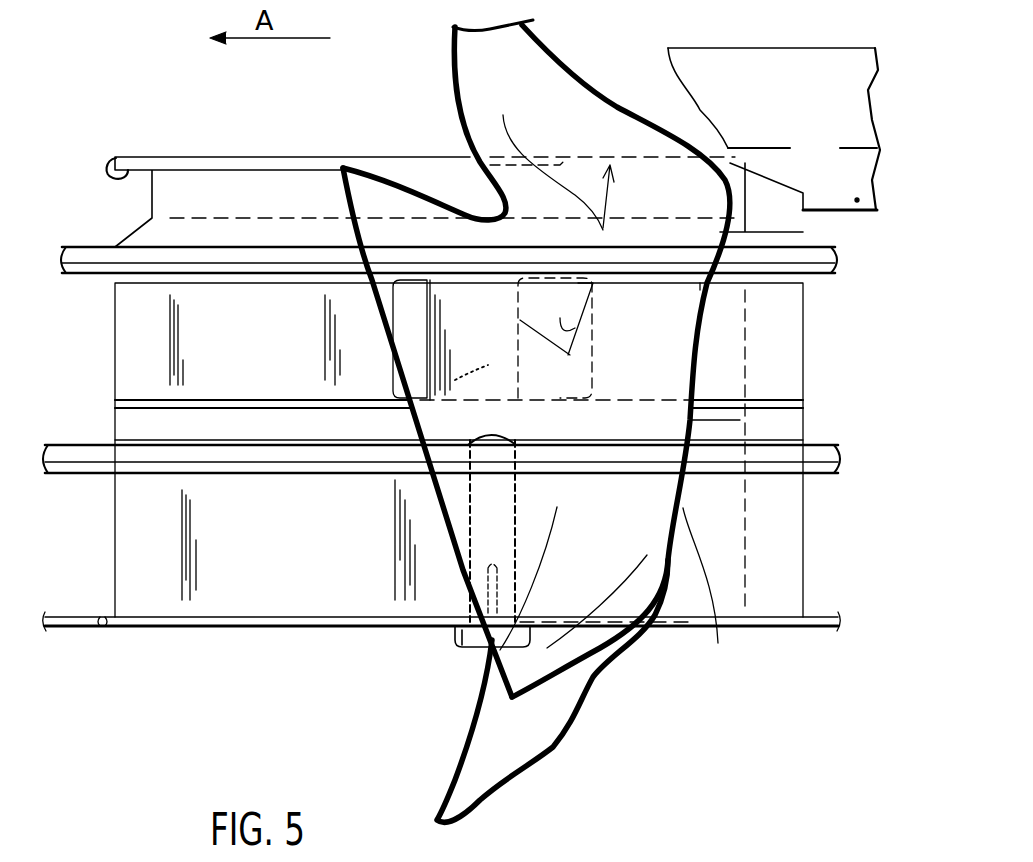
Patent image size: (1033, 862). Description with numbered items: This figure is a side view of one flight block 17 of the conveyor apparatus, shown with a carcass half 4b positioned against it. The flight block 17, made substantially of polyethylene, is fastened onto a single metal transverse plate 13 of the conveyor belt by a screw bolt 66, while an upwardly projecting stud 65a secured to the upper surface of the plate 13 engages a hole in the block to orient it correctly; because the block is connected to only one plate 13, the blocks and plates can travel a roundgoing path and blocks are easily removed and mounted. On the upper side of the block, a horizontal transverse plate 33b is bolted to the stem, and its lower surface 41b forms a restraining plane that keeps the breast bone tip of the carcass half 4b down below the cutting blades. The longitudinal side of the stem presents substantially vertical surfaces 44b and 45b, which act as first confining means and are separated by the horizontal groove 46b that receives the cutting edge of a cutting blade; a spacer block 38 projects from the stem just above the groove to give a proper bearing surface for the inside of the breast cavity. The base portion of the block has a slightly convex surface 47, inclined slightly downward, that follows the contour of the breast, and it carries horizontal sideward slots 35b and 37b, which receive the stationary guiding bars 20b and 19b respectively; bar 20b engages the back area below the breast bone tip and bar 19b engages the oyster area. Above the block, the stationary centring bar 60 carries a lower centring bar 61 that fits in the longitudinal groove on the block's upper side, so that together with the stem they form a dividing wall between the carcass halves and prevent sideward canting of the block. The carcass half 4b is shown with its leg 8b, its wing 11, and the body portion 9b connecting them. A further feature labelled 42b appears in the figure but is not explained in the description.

The carcass half 4b is at (615, 91).
The leg 8b is at (484, 90).
The body portion 9b is at (640, 352).
The wing 11 is at (505, 750).
The transverse plate 13 is at (262, 615).
The flight block 17 is at (388, 147).
The guiding bar 19b is at (78, 458).
The guiding bar 20b is at (87, 266).
The transverse plate 33b is at (150, 157).
The slot 35b is at (814, 230).
The slot 37b is at (153, 443).
The spacer block 38 is at (416, 351).
The lower surface 41b is at (112, 160).
The latch member 42b is at (475, 351).
The vertical surface 44b is at (246, 355).
The vertical surface 45b is at (302, 525).
The groove 46b is at (783, 420).
The surface 47 is at (626, 587).
The centring bar 60 is at (778, 78).
The centring bar 61 is at (857, 203).
The stud 65a is at (492, 592).
The screw bolt 66 is at (462, 643).